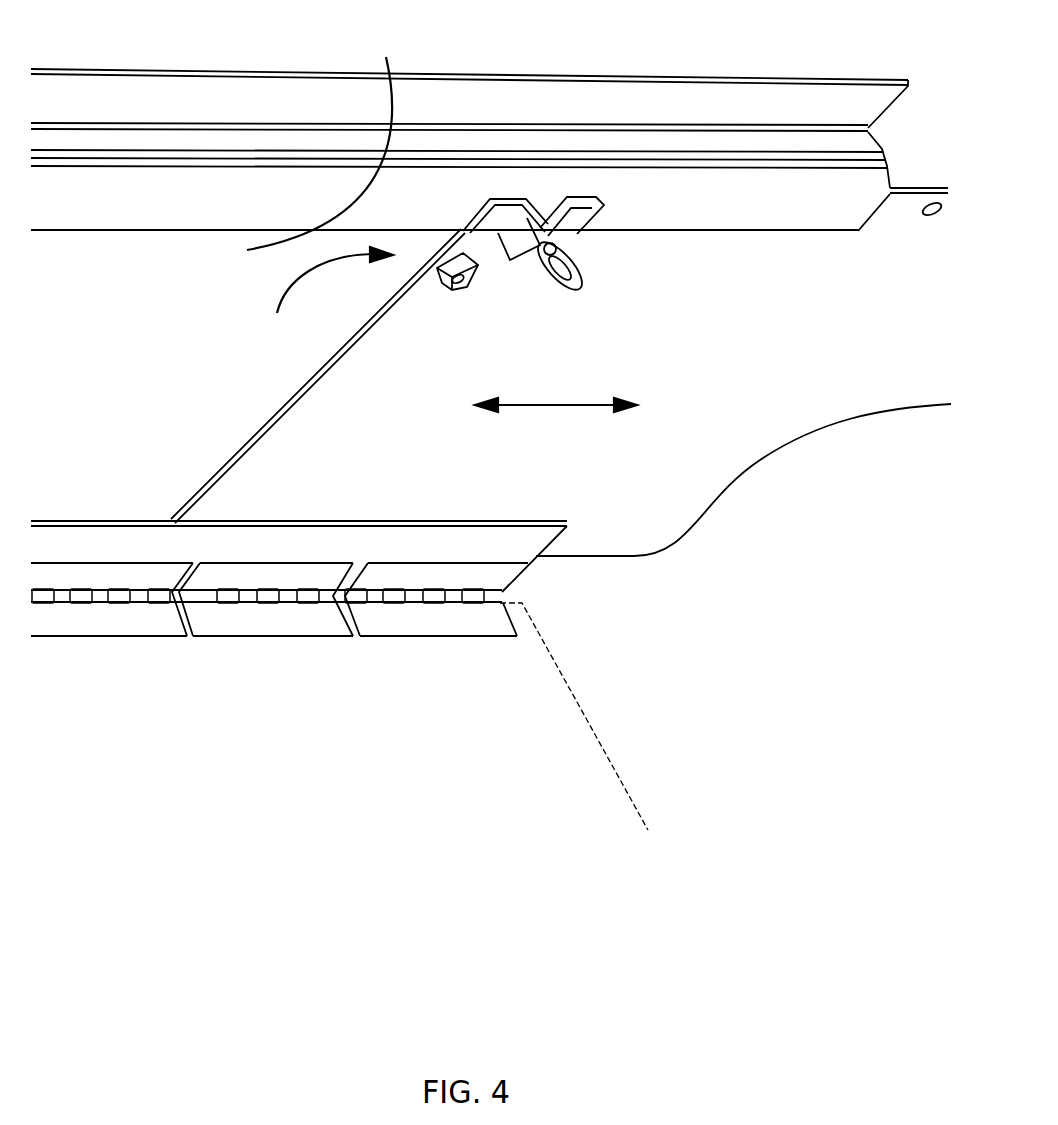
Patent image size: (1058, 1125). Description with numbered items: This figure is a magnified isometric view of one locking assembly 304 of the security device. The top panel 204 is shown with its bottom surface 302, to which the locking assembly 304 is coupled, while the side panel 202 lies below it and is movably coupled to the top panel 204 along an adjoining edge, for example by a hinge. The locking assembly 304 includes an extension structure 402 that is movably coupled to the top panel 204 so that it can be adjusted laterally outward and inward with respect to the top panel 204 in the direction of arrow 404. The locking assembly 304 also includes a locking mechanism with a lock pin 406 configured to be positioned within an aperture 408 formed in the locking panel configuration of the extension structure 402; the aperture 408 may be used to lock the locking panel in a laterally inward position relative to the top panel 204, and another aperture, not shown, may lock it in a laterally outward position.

The side panel 202 is at (600, 739).
The top panel 204 is at (226, 69).
The bottom surface 302 is at (323, 141).
The locking assembly 304 is at (325, 295).
The extension structure 402 is at (221, 468).
The arrow 404 is at (552, 406).
The lock pin 406 is at (555, 252).
The aperture 408 is at (930, 216).